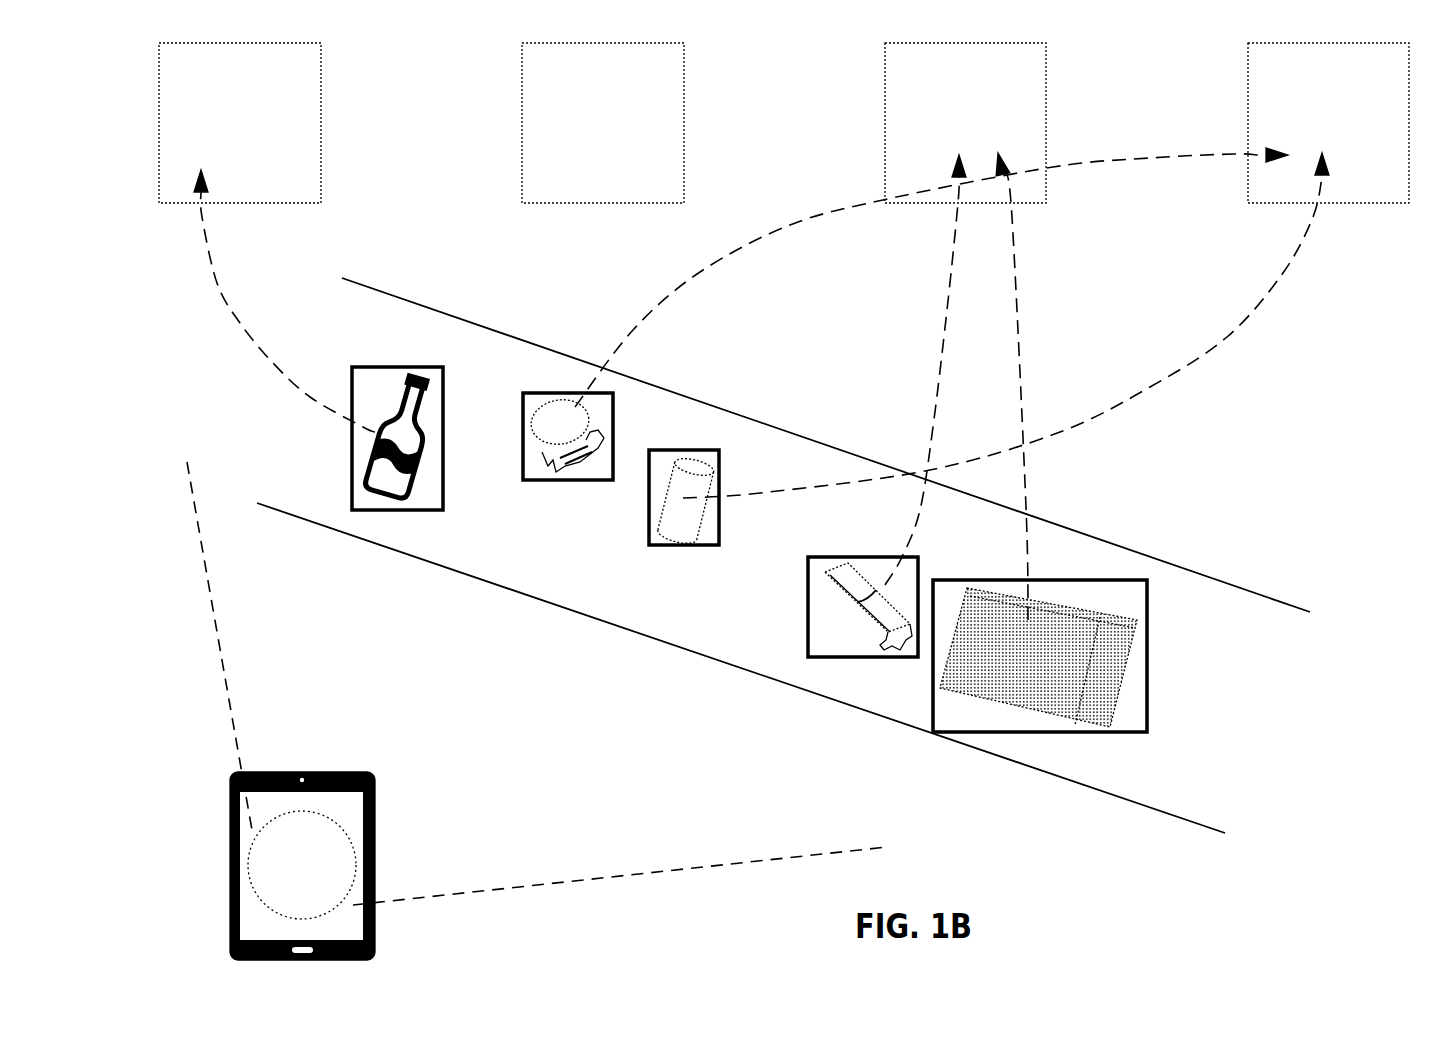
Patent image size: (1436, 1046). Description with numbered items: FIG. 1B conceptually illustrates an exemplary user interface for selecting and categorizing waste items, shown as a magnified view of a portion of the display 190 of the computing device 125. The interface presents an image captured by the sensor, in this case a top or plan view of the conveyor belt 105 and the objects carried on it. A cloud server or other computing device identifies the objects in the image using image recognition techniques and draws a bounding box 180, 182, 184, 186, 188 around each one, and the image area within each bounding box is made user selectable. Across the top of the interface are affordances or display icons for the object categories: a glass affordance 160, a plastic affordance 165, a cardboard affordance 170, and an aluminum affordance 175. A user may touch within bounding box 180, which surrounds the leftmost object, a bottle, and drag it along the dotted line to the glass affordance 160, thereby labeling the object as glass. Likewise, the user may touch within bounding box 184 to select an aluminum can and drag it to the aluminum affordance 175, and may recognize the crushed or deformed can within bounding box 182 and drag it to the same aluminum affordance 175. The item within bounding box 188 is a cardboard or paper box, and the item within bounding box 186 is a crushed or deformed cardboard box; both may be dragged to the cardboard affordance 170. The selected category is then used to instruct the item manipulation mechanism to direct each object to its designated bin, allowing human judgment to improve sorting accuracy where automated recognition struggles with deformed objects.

The conveyor belt 105 is at (1153, 812).
The computing device 125 is at (237, 772).
The glass affordance 160 is at (303, 201).
The plastic affordance 165 is at (666, 201).
The cardboard affordance 170 is at (1030, 201).
The aluminum affordance 175 is at (1392, 201).
The bounding box 180 is at (378, 366).
The bounding box 182 is at (540, 393).
The bounding box 184 is at (660, 545).
The bounding box 186 is at (819, 557).
The bounding box 188 is at (1087, 580).
The display 190 is at (343, 812).